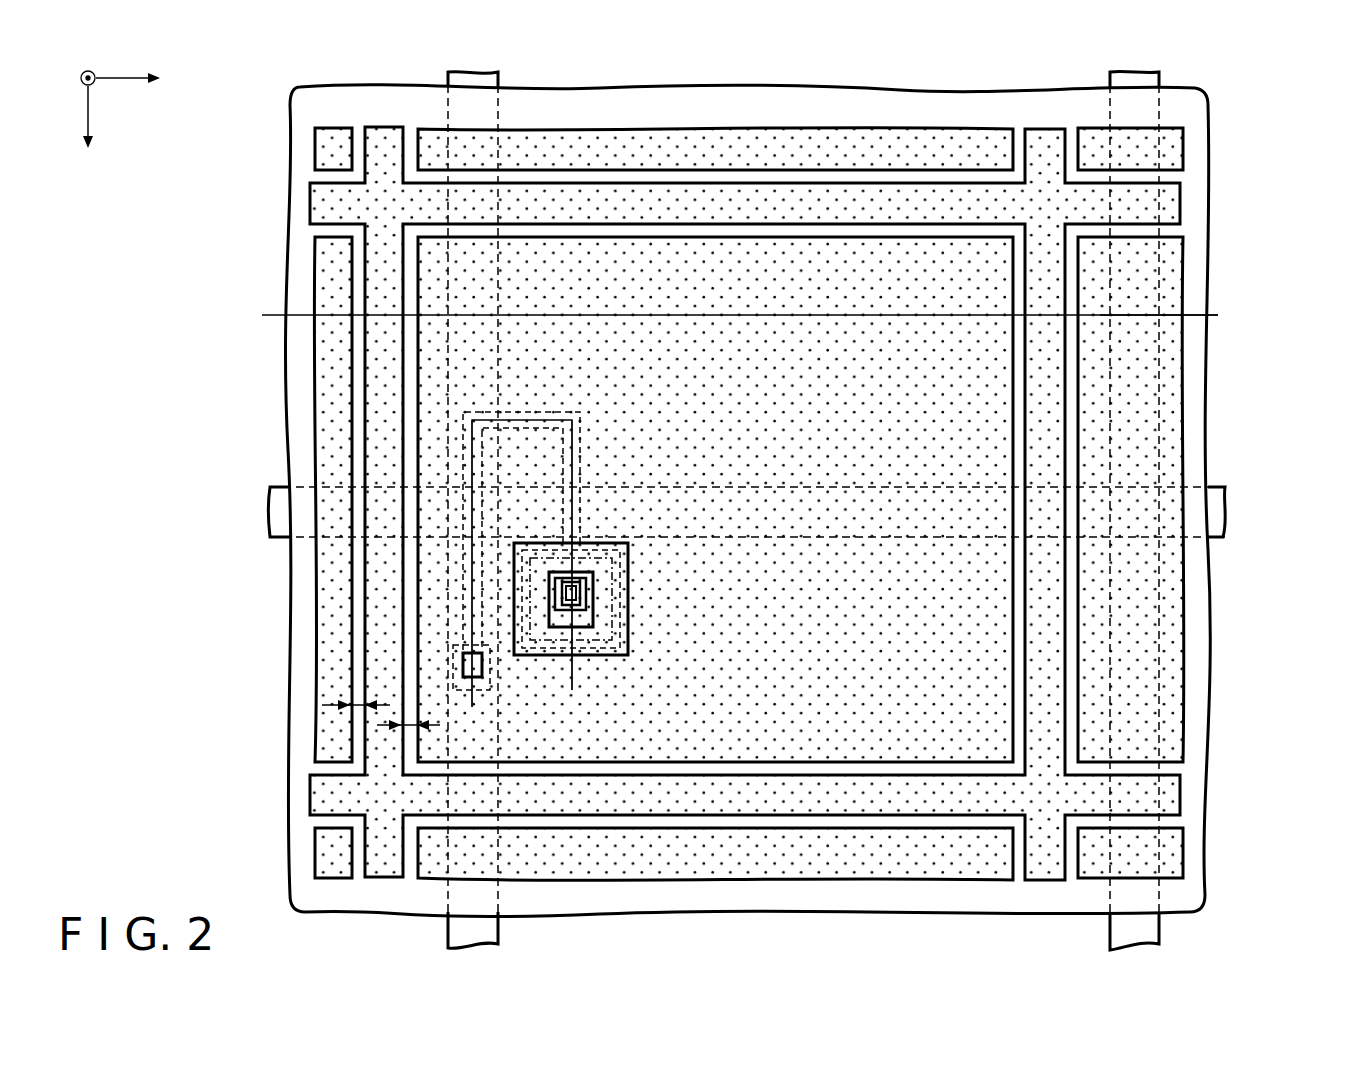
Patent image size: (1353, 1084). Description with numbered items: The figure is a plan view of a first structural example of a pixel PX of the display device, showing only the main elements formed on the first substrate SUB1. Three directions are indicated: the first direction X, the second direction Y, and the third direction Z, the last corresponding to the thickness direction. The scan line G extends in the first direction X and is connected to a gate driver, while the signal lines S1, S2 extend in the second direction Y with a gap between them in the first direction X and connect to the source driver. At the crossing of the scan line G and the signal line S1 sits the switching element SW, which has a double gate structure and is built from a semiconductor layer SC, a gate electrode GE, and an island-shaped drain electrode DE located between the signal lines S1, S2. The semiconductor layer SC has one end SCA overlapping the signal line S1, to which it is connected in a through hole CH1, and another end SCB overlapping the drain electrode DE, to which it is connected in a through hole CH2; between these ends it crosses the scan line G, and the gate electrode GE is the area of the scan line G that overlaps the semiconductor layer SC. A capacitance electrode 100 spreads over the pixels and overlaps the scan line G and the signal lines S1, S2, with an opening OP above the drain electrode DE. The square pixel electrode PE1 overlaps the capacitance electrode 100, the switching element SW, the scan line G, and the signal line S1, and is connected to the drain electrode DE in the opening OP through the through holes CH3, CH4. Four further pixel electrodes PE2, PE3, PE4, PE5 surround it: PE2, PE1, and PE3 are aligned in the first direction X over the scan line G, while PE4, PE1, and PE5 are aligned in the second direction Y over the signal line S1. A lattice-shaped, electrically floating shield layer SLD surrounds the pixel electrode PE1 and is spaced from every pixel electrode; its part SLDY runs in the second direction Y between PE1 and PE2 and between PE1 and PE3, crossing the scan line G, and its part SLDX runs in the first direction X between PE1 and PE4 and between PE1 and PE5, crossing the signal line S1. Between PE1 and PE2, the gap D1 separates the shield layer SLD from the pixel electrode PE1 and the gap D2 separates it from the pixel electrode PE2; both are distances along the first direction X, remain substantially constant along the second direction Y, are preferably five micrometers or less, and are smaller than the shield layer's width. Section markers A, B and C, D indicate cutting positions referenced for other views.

The capacitance electrode 100 is at (1200, 98).
The first substrate SUB1 is at (1262, 198).
The pixel PX is at (340, 220).
The shield layer SLD is at (385, 128).
The part of the shield layer extending in the first direction SLDX is at (665, 193).
The part of the shield layer extending in the second direction SLDY is at (1058, 365).
The pixel electrode PE1 is at (895, 245).
The pixel electrode PE2 is at (322, 270).
The pixel electrode PE3 is at (1180, 262).
The pixel electrode PE4 is at (820, 150).
The pixel electrode PE5 is at (940, 870).
The signal line S1 is at (498, 936).
The signal line S2 is at (1159, 938).
The scan line G is at (1225, 511).
The switching element SW is at (435, 470).
The semiconductor layer SC is at (582, 415).
The gate electrode GE is at (565, 484).
The opening OP is at (630, 548).
The drain electrode DE is at (622, 578).
The end of the semiconductor layer SCA is at (490, 690).
The end of the semiconductor layer SCB is at (598, 606).
The through hole CH1 is at (482, 672).
The through hole CH2 is at (575, 612).
The through hole CH3 is at (585, 598).
The through hole CH4 is at (593, 602).
The gap D1 is at (408, 720).
The gap D2 is at (352, 708).
The line A is at (472, 581).
The line B is at (570, 571).
The section line C is at (727, 316).
The section line D is at (1171, 316).
The first direction X is at (139, 80).
The second direction Y is at (85, 132).
The third direction Z is at (78, 64).